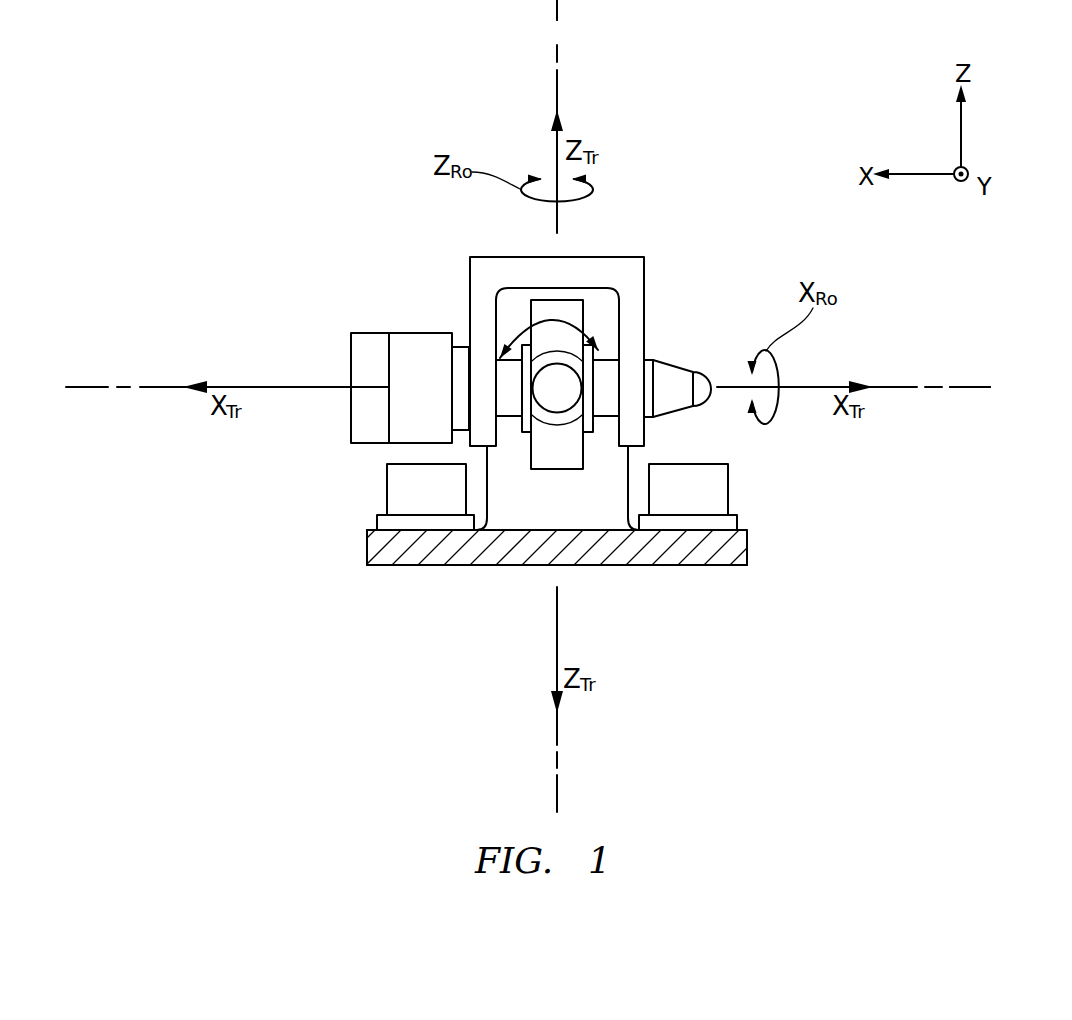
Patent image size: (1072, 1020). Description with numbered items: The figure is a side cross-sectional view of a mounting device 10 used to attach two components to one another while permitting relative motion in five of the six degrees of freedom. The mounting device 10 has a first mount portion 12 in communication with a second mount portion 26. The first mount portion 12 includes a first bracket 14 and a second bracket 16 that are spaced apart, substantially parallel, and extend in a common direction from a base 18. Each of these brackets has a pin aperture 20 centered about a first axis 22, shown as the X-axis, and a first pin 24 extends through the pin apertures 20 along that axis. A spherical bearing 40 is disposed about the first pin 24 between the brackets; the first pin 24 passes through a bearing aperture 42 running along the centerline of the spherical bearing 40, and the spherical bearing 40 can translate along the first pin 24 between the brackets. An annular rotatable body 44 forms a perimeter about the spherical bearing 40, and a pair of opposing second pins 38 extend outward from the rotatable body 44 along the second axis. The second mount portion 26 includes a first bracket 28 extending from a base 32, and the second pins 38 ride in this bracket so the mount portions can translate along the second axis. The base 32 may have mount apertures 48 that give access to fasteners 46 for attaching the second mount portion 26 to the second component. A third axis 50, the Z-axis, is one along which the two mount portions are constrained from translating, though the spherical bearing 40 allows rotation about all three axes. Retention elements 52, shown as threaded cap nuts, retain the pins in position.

The mounting device 10 is at (347, 189).
The first mount portion 12 is at (658, 262).
The first bracket 14 is at (484, 320).
The second bracket 16 is at (633, 326).
The base 18 is at (510, 262).
The pin aperture 20 is at (504, 354).
The first axis 22 is at (979, 387).
The first pin 24 is at (680, 400).
The second mount portion 26 is at (374, 582).
The first bracket 28 is at (505, 483).
The base 32 is at (682, 556).
The second pins 38 is at (560, 392).
The spherical bearing 40 is at (589, 420).
The bearing aperture 42 is at (625, 345).
The rotatable body 44 is at (562, 312).
The fasteners 46 is at (407, 487).
The mount apertures 48 is at (397, 587).
The third axis 50 is at (557, 20).
The retention elements 52 is at (350, 358).